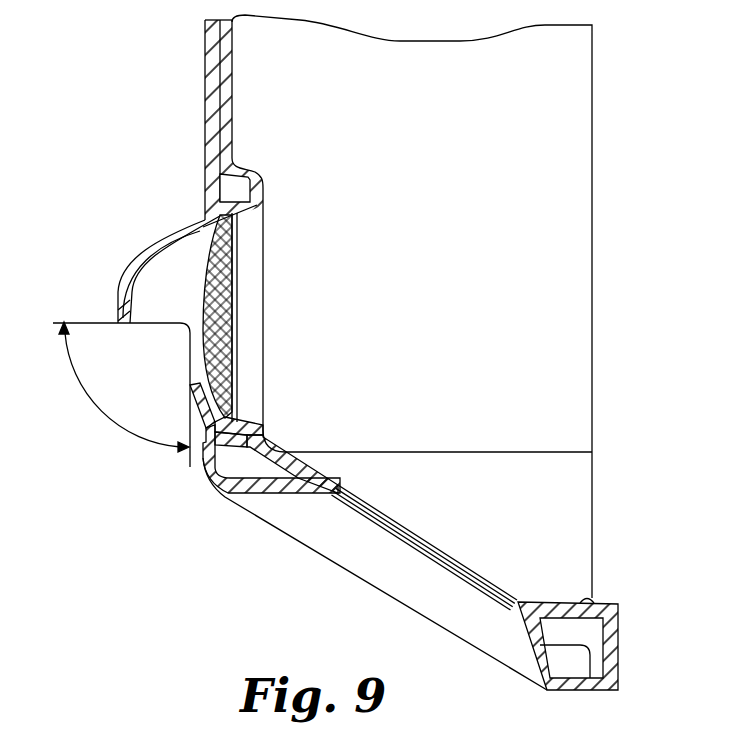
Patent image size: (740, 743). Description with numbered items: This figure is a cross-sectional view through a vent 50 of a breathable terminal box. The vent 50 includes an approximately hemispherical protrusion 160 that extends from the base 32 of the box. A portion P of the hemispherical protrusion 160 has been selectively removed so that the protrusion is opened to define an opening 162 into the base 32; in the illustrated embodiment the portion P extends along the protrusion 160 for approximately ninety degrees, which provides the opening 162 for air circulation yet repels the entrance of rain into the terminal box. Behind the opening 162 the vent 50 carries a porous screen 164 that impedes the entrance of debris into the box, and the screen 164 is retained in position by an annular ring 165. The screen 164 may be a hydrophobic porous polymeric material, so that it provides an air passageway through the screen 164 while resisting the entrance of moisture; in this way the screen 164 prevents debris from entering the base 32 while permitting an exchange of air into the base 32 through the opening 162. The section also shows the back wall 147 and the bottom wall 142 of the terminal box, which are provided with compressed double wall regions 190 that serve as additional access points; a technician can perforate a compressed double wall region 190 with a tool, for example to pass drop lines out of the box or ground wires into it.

The base 32 is at (580, 87).
The vent 50 is at (118, 248).
The bottom wall 142 is at (368, 587).
The back wall 147 is at (205, 81).
The hemispherical protrusion 160 is at (118, 297).
The opening 162 is at (168, 346).
The porous screen 164 is at (222, 281).
The annular ring 165 is at (238, 250).
The compressed double wall region 190 is at (465, 583).
The portion P is at (98, 425).